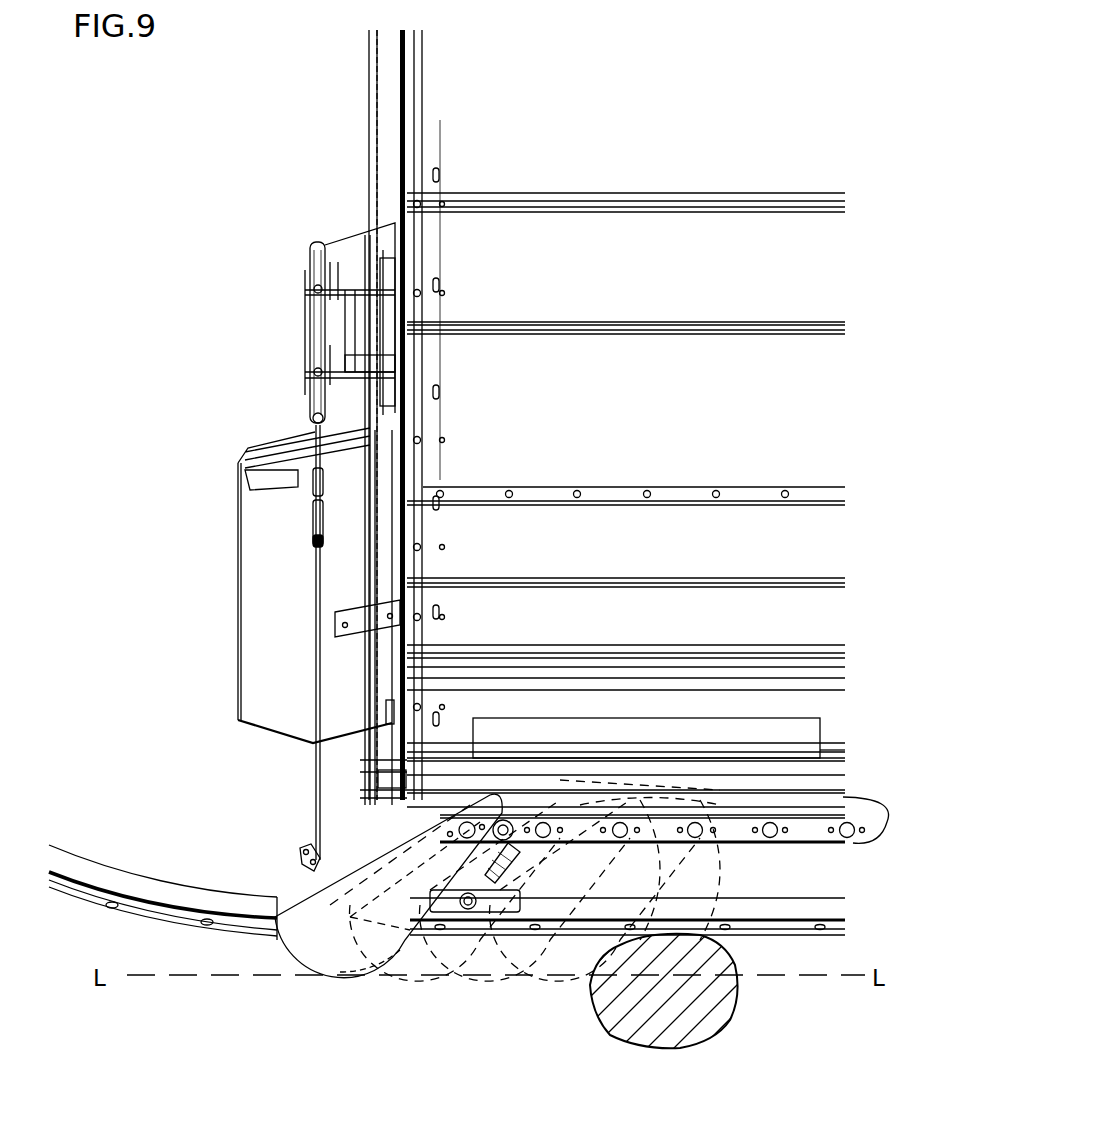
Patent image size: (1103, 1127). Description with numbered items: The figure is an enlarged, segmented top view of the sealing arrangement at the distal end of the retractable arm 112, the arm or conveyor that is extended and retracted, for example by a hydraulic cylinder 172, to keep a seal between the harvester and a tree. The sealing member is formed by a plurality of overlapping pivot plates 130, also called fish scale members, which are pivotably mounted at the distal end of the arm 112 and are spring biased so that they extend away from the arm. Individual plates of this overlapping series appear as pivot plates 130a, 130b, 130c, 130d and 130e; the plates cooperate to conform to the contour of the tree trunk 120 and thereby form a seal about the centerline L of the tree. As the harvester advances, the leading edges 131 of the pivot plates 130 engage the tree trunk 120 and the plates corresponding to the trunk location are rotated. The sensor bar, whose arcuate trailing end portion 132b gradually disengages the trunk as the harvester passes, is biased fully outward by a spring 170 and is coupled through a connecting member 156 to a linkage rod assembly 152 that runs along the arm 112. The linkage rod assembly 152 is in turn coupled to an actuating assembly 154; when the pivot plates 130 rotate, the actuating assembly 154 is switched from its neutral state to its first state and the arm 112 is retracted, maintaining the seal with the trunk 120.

The retractable arm 112 is at (333, 176).
The actuating assembly 154 is at (305, 332).
The linkage rod assembly 152 is at (318, 784).
The connecting member 156 is at (300, 857).
The trailing end portion 132b is at (82, 903).
The pivot plates 130 is at (311, 942).
The leading edges 131 is at (369, 968).
The arm position a 130a is at (421, 968).
The arm position b 130b is at (495, 970).
The arm position c 130c is at (571, 968).
The lower rail 130d is at (735, 810).
The rail end flange 130e is at (828, 851).
The spring 170 is at (492, 860).
The hydraulic cylinder 172 is at (467, 822).
The tree trunk 120 is at (730, 1030).